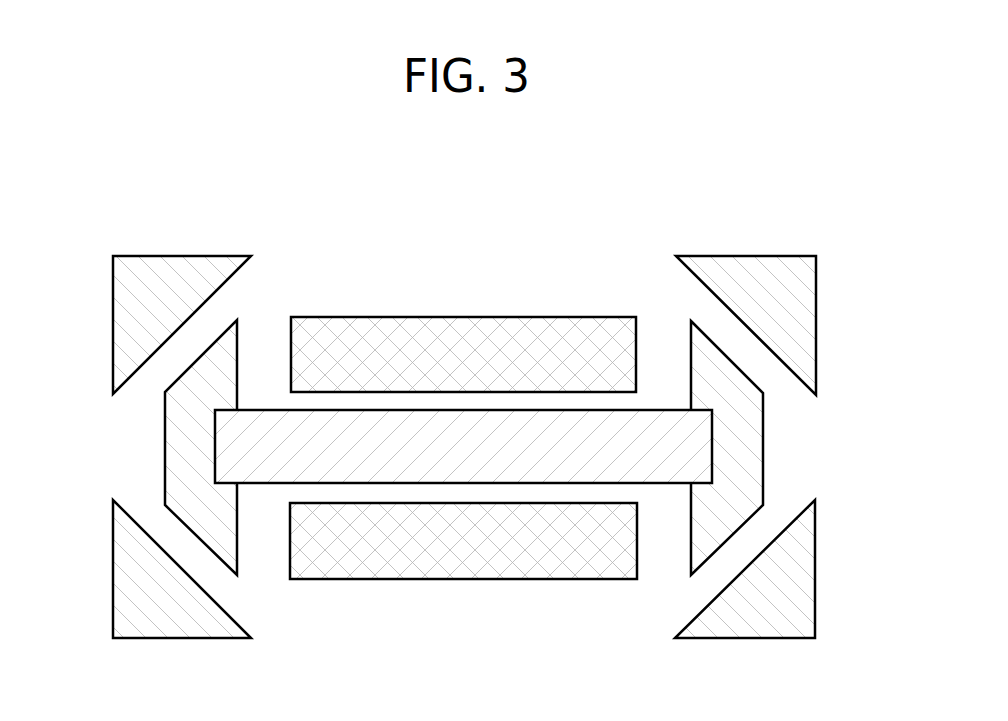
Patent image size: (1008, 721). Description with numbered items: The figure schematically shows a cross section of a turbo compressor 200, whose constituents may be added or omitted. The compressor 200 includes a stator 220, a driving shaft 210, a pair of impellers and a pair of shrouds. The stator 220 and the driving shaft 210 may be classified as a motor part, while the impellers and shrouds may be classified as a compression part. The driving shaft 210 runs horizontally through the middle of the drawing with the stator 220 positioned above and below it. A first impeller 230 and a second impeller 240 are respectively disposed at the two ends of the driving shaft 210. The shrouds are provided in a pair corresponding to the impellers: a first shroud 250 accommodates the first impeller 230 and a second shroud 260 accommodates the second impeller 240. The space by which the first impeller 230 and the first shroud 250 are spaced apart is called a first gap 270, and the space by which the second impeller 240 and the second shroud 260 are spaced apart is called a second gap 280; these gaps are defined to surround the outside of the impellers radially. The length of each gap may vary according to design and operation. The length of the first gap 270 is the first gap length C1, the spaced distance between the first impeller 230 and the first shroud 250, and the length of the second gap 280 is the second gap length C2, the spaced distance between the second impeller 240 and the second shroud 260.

The compressor 200 is at (141, 132).
The driving shaft 210 is at (259, 425).
The stator 220 is at (456, 340).
The first impeller 230 is at (178, 442).
The second impeller 240 is at (755, 440).
The first shroud 250 is at (128, 476).
The second shroud 260 is at (799, 476).
The first gap 270 is at (182, 598).
The second gap 280 is at (752, 540).
The first gap length C1 is at (197, 352).
The second gap length C2 is at (748, 336).